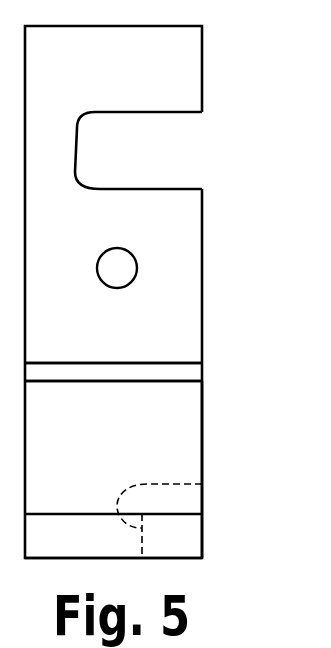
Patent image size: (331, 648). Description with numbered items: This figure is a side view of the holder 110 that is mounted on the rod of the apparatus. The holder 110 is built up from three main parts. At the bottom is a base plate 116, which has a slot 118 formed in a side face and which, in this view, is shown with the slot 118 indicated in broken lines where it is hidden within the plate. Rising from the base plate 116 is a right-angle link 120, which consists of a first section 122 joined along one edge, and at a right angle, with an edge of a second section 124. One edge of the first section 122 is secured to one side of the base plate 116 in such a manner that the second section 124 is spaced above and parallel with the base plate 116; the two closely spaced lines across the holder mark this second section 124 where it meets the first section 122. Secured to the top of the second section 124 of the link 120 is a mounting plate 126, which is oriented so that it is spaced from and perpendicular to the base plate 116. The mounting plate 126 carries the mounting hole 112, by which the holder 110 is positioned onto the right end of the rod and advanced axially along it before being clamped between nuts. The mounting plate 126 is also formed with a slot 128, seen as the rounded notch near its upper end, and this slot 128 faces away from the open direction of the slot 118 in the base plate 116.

The holder 110 is at (214, 183).
The mounting hole 112 is at (124, 261).
The base plate 116 is at (167, 538).
The slot 118 is at (202, 484).
The right-angle link 120 is at (203, 443).
The first section 122 is at (178, 400).
The second section 124 is at (182, 373).
The mounting plate 126 is at (177, 307).
The slot 128 is at (148, 112).